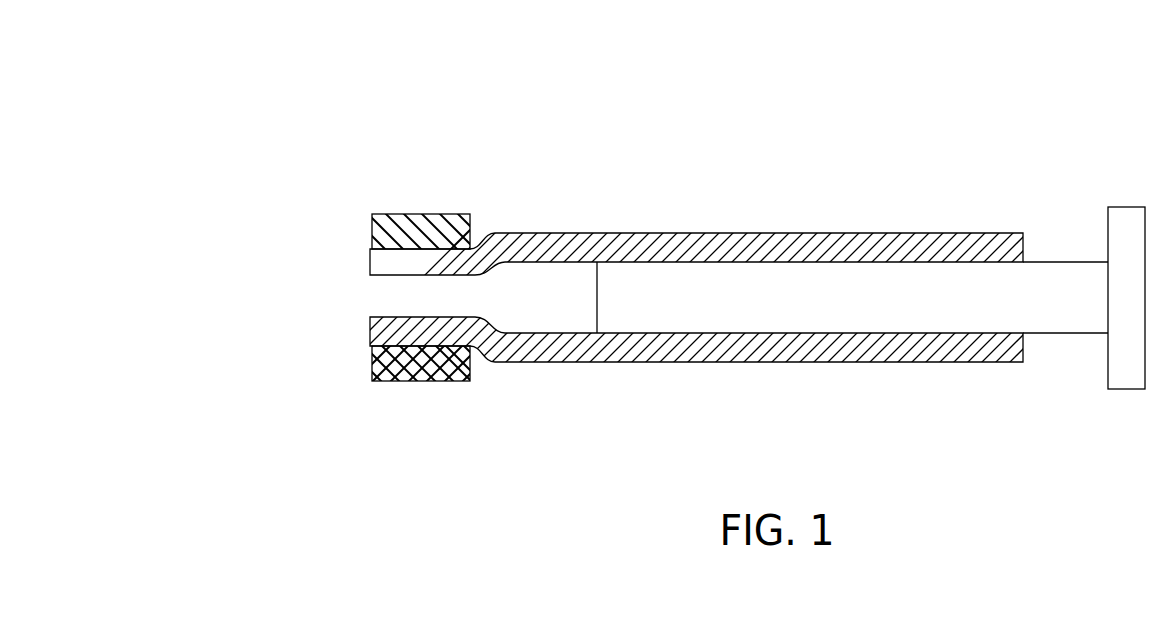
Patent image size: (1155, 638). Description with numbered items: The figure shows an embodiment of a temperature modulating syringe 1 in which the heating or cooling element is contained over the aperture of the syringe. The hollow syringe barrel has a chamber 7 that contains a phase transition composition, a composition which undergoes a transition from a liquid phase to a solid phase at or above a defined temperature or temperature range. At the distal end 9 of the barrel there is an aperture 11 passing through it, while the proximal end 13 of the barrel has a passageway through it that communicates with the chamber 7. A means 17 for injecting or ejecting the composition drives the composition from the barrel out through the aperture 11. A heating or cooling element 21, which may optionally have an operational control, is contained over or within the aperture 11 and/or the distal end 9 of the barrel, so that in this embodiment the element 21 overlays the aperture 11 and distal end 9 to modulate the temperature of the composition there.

The temperature modulating syringe 1 is at (817, 158).
The chamber 7 is at (552, 290).
The distal end 9 is at (500, 210).
The aperture 11 is at (382, 297).
The proximal end 13 is at (1023, 343).
The means for injecting/ejecting 17 is at (1062, 261).
The heating or cooling element 21 is at (420, 214).